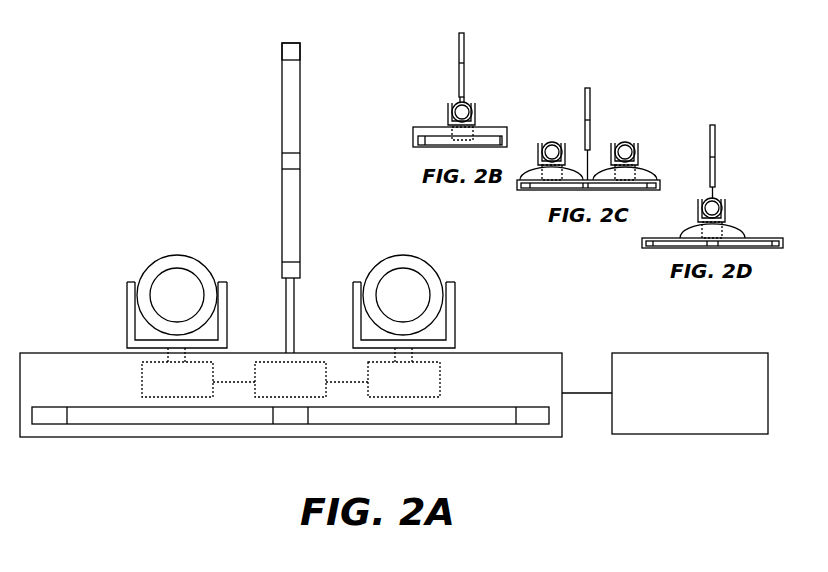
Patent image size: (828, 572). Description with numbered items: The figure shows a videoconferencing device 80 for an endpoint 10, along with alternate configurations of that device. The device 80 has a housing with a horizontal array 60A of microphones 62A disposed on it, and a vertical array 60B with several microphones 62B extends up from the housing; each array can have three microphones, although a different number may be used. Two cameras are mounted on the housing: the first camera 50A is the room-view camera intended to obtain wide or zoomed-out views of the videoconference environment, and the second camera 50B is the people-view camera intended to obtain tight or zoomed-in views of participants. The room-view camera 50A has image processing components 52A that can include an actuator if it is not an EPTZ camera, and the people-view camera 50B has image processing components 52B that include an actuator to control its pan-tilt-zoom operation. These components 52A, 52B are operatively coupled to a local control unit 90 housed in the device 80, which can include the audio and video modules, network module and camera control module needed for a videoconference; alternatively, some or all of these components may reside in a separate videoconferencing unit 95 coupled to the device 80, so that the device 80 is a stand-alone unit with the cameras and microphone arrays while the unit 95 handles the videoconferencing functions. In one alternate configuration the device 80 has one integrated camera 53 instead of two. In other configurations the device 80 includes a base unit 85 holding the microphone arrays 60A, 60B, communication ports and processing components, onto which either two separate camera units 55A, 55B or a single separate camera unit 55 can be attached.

In FIG. 2A, the endpoint 10 is at (110, 147).
In FIG. 2A, the first camera 50A is at (170, 233).
In FIG. 2A, the second camera 50B is at (392, 246).
In FIG. 2A, the image processing components 52A is at (195, 397).
In FIG. 2A, the image processing components 52B is at (425, 397).
In FIG. 2B, the integrated camera 53 is at (455, 106).
In FIG. 2D, the camera unit 55 is at (723, 213).
In FIG. 2C, the camera unit 55A is at (553, 143).
In FIG. 2C, the camera unit 55B is at (628, 143).
In FIG. 2A, the horizontal array 60A is at (291, 416).
In FIG. 2B, the horizontal array 60A is at (413, 137).
In FIG. 2A, the vertical array 60B is at (260, 197).
In FIG. 2B, the vertical array 60B is at (459, 35).
In FIG. 2A, the microphones 62A is at (48, 425).
In FIG. 2A, the microphones 62B is at (282, 52).
In FIG. 2B, the videoconferencing device 80 is at (500, 62).
In FIG. 2C, the videoconferencing device 80 is at (648, 90).
In FIG. 2D, the videoconferencing device 80 is at (730, 145).
In FIG. 2C, the base unit 85 is at (530, 190).
In FIG. 2D, the base unit 85 is at (650, 250).
In FIG. 2A, the control unit 90 is at (317, 397).
In FIG. 2A, the videoconferencing unit 95 is at (715, 434).